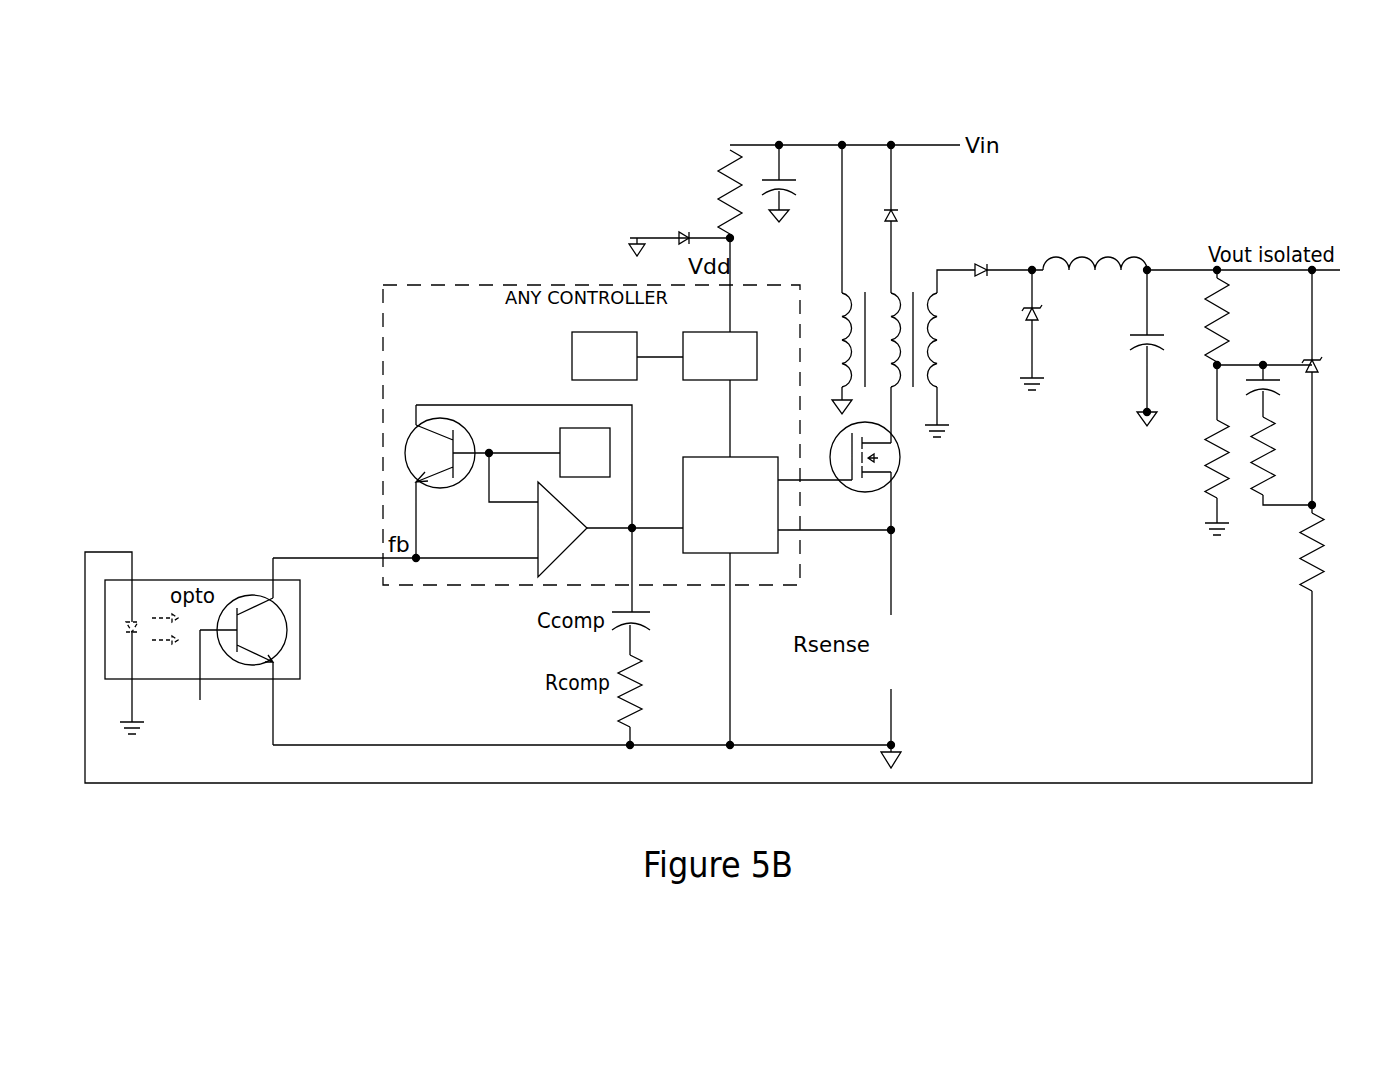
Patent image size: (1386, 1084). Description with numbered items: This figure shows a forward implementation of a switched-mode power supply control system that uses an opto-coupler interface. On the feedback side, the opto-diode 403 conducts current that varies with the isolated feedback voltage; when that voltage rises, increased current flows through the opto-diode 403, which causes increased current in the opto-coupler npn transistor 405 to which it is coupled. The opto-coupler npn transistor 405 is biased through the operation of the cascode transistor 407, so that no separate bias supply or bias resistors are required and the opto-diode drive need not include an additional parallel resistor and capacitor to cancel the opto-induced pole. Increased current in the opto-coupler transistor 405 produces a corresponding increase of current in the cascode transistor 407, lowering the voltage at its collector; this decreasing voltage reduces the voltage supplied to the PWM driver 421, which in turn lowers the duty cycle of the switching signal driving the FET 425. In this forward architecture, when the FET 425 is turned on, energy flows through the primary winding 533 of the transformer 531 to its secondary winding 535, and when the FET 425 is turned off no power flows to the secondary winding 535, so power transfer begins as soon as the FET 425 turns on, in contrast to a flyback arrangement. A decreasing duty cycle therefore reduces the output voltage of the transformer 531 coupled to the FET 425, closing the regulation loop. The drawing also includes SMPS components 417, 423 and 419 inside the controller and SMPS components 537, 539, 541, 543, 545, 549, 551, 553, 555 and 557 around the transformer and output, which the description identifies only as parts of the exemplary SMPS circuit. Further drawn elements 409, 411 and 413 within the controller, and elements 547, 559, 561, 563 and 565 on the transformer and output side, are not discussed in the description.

The opto-diode 403 is at (152, 585).
The opto-coupler npn transistor 405 is at (275, 632).
The cascode transistor 407 is at (408, 440).
The GM amplifier 409 is at (560, 553).
The compensation resistor Rcomp 411 is at (645, 677).
The compensation capacitor Ccomp 413 is at (654, 622).
The SMPS component 417 is at (572, 372).
The SMPS component 419 is at (742, 382).
The PWM driver 421 is at (730, 505).
The SMPS component 423 is at (558, 438).
The FET 425 is at (900, 457).
The transformer 531 is at (905, 272).
The primary winding 533 is at (885, 302).
The secondary winding 535 is at (940, 357).
The SMPS component 537 is at (680, 236).
The SMPS component 539 is at (720, 165).
The SMPS component 541 is at (790, 182).
The SMPS component 543 is at (990, 266).
The SMPS component 545 is at (1132, 343).
The resistor 547 is at (1230, 302).
The SMPS component 549 is at (1208, 473).
The SMPS component 551 is at (1320, 360).
The SMPS component 553 is at (1300, 572).
The SMPS component 555 is at (1283, 388).
The SMPS component 557 is at (1272, 466).
The zener diode 559 is at (1040, 312).
The output inductor 561 is at (1088, 258).
The auxiliary winding 563 is at (838, 302).
The clamp diode 565 is at (866, 182).